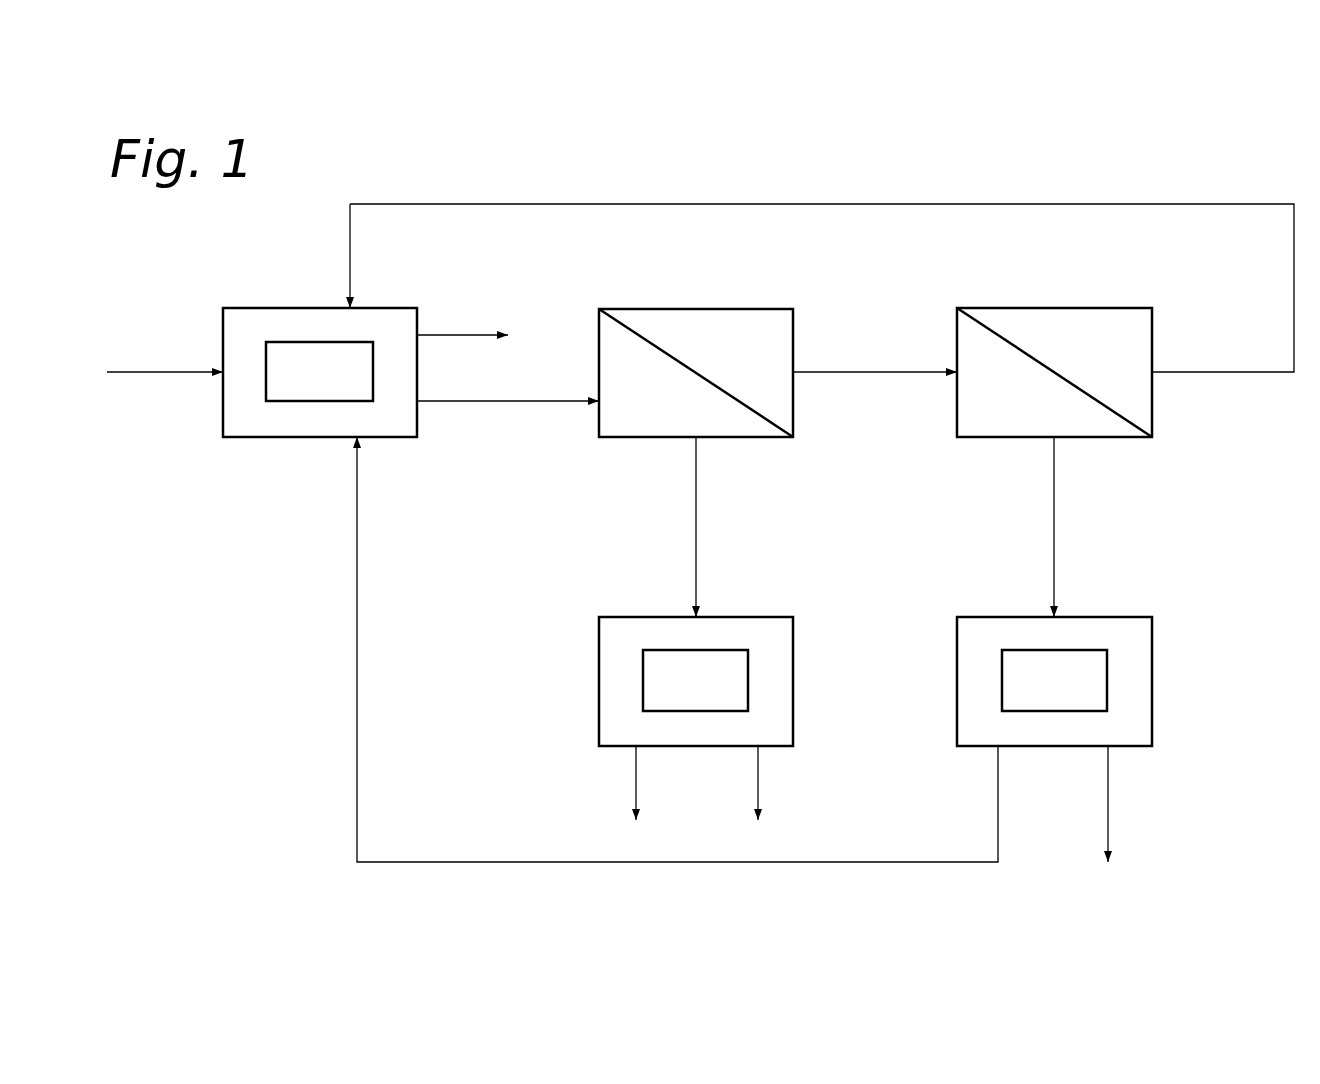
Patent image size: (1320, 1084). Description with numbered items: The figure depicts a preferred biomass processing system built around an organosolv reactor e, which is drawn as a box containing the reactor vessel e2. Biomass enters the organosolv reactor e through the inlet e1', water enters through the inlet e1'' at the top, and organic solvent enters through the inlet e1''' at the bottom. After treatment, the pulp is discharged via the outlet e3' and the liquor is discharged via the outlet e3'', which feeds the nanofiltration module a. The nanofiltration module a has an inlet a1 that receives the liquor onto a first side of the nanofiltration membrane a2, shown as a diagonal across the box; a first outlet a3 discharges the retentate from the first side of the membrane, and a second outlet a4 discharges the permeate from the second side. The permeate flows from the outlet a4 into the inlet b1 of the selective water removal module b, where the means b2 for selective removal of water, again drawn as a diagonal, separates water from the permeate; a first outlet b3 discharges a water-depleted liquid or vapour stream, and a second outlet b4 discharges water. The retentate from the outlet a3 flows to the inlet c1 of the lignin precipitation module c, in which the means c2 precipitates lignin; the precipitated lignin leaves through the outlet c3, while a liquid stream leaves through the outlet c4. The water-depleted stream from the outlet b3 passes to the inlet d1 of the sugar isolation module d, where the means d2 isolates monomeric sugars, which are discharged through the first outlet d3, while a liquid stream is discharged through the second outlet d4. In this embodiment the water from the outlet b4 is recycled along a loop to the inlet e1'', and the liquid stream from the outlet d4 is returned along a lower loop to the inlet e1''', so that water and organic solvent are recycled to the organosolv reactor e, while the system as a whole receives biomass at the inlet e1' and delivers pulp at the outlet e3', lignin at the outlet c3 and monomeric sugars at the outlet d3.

The organosolv reactor e is at (232, 415).
The inlet for receiving the biomass e1' is at (165, 336).
The inlet for receiving water e1'' is at (313, 256).
The inlet for receiving organic solvent e1''' is at (486, 649).
The reactor e2 is at (280, 393).
The outlet for discharging the pulp e3' is at (462, 304).
The outlet for discharging the liquor e3'' is at (461, 434).
The nano filtration module a is at (708, 338).
The inlet a1 is at (598, 398).
The nano filtration membrane a2 is at (753, 410).
The first outlet a3 is at (690, 437).
The second outlet a4 is at (795, 370).
The selective water removal module b is at (1095, 328).
The inlet b1 is at (957, 370).
The means for selective removal of water b2 is at (1113, 413).
The first outlet b3 is at (1048, 438).
The second outlet b4 is at (1152, 372).
The lignin precipitation module c is at (627, 630).
The inlet c1 is at (697, 617).
The means for precipitation lignin c2 is at (655, 673).
The outlet for discharging precipitated lignin c3 is at (630, 747).
The outlet for discharging a liquid stream c4 is at (762, 747).
The sugar isolation module d is at (1140, 635).
The inlet d1 is at (1057, 617).
The means for isolating monomeric sugars d2 is at (1097, 685).
The first outlet d3 is at (1110, 747).
The second outlet d4 is at (995, 747).